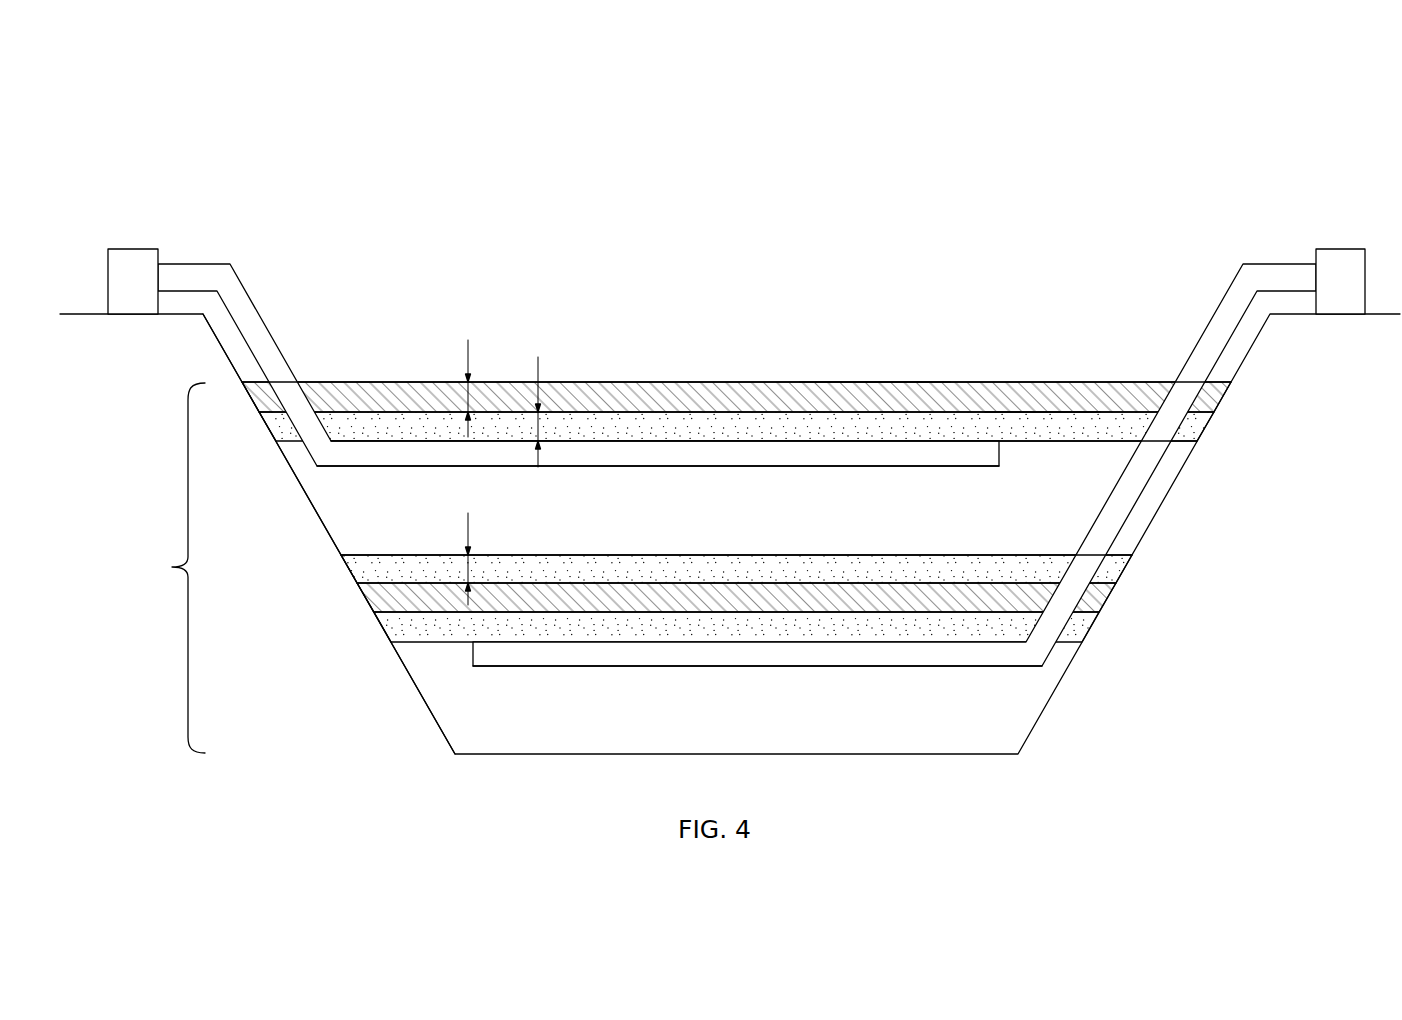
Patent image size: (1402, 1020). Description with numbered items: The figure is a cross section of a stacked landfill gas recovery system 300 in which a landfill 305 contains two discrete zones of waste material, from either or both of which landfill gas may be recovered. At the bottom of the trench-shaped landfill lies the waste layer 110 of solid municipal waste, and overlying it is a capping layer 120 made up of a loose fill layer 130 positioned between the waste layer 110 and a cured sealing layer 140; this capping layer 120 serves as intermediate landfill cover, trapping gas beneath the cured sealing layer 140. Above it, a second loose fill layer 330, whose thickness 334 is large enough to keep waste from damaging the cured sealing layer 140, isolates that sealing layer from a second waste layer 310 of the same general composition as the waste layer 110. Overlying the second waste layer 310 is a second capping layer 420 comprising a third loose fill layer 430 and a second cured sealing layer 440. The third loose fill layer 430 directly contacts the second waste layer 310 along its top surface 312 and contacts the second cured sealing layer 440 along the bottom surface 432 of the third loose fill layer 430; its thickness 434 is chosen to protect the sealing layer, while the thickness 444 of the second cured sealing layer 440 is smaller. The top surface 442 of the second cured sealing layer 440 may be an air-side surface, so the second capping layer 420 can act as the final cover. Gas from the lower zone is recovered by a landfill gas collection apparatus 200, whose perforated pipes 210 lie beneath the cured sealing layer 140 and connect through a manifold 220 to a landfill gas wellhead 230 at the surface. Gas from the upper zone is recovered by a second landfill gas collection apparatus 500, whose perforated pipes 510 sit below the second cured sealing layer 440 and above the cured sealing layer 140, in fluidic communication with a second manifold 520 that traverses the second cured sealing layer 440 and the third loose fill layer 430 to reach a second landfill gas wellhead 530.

The stacked landfill gas recovery system 300 is at (1210, 173).
The landfill 305 is at (160, 568).
The waste layer 110 is at (1050, 700).
The second waste layer 310 is at (305, 493).
The second capping layer 420 is at (780, 413).
The second cured sealing layer 440 is at (738, 381).
The third loose fill layer 430 is at (1070, 432).
The bottom surface of the third loose fill layer 432 is at (985, 420).
The top surface of the second cured sealing layer 442 is at (868, 381).
The thickness of the second cured sealing layer 444 is at (443, 383).
The thickness of the third loose fill layer 434 is at (563, 406).
The top surface of the second waste layer 312 is at (1043, 443).
The capping layer 120 is at (736, 607).
The second loose fill layer 330 is at (350, 570).
The thickness of the second loose fill layer 334 is at (441, 552).
The cured sealing layer 140 is at (366, 598).
The loose fill layer 130 is at (383, 628).
The second landfill gas collection apparatus 500 is at (263, 262).
The second manifold 520 is at (263, 320).
The perforated pipes 510 is at (737, 468).
The second landfill gas wellhead 530 is at (128, 249).
The landfill gas collection apparatus 200 is at (1197, 312).
The manifold 220 is at (1140, 494).
The perforated pipes 210 is at (708, 668).
The landfill gas wellhead 230 is at (1342, 249).